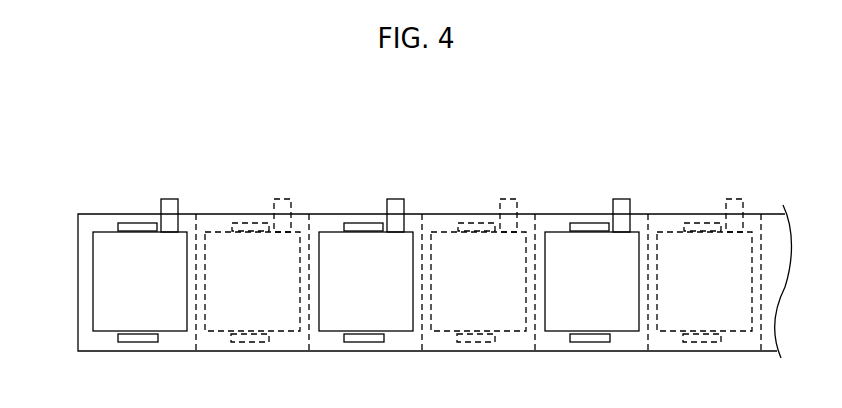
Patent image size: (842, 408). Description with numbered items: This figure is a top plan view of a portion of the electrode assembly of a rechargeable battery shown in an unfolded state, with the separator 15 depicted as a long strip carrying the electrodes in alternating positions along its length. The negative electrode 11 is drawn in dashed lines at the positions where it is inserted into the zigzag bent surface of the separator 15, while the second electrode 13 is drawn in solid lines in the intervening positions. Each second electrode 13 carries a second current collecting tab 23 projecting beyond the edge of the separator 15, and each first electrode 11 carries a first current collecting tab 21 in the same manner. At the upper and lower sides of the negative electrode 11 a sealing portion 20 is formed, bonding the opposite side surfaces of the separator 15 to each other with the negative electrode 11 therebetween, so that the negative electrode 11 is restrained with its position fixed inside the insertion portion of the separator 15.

The first electrode 11 is at (221, 325).
The second electrode 13 is at (107, 325).
The separator 15 is at (78, 283).
The sealing portion 20 is at (137, 222).
The first current collecting tab 21 is at (282, 198).
The second current collecting tab 23 is at (169, 198).